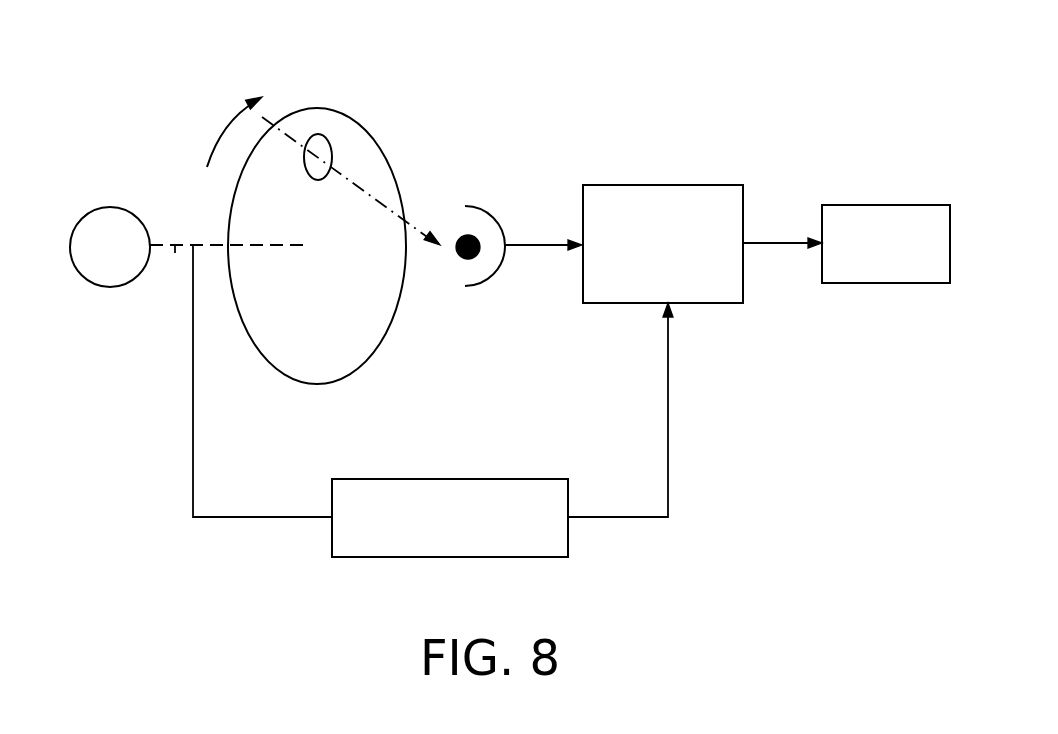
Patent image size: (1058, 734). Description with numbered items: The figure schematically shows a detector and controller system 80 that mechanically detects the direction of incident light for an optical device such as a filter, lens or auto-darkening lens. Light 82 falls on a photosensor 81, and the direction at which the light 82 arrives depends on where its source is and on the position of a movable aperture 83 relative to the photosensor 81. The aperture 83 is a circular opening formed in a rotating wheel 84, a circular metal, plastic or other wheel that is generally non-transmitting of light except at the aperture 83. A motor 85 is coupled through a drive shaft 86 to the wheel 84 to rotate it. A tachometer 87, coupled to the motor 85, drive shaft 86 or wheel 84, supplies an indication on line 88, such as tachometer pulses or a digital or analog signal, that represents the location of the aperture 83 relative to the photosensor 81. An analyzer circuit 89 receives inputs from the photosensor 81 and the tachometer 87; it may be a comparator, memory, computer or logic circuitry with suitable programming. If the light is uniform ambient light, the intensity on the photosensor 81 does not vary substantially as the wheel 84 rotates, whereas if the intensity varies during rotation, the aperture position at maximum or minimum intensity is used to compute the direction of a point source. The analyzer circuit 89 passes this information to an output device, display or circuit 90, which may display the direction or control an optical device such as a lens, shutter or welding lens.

The detector and controller system 80 is at (175, 140).
The photosensor 81 is at (495, 222).
The light 82 is at (434, 243).
The movable aperture 83 is at (323, 135).
The rotating wheel 84 is at (293, 115).
The motor 85 is at (113, 207).
The drive shaft 86 is at (175, 253).
The tachometer 87 is at (330, 548).
The line 88 is at (665, 388).
The analyzer circuit 89 is at (606, 303).
The output device, display or circuit 90 is at (886, 283).